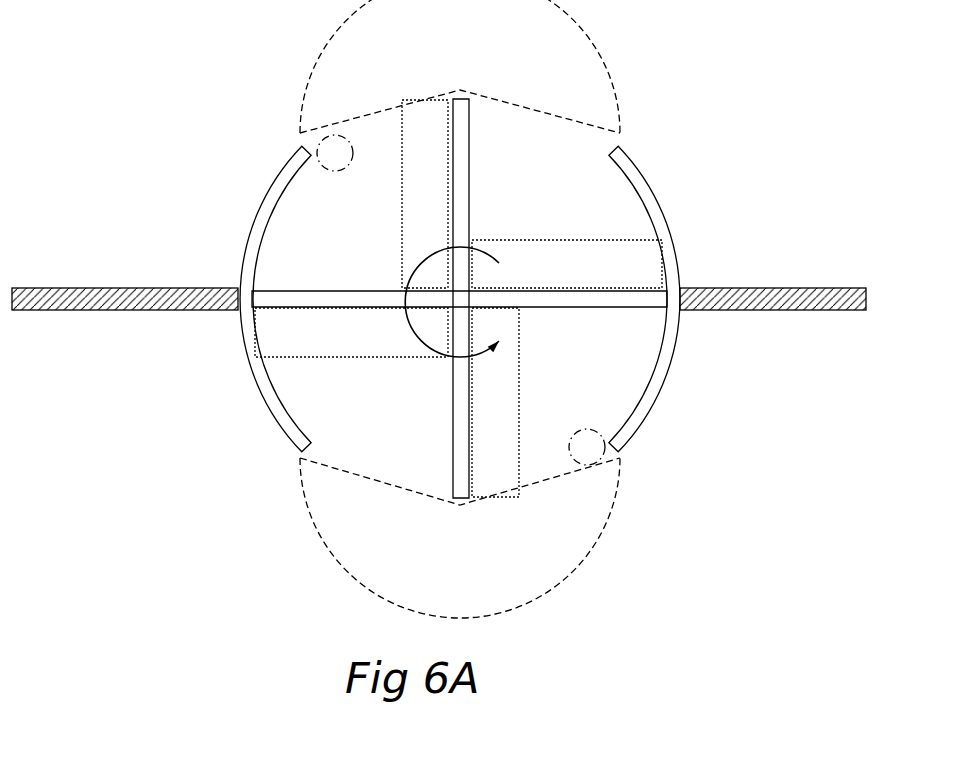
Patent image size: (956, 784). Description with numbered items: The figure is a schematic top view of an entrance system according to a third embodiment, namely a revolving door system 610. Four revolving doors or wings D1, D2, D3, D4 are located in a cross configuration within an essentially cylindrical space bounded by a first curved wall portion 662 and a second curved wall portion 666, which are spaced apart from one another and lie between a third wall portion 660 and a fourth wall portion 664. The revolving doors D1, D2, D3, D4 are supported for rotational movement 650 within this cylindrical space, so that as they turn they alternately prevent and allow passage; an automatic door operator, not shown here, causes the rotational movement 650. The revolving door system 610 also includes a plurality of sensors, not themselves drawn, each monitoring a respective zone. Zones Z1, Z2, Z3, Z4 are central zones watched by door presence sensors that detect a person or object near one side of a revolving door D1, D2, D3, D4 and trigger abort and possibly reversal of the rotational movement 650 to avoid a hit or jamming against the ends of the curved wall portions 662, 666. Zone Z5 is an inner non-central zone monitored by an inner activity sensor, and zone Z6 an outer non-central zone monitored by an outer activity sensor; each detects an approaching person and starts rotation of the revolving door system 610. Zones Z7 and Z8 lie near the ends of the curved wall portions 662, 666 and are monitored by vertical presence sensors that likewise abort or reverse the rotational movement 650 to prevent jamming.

The revolving door system 610 is at (135, 98).
The third wall portion 660 is at (146, 296).
The fourth wall portion 664 is at (756, 296).
The first curved wall portion 662 is at (256, 355).
The second curved wall portion 666 is at (668, 366).
The rotational movement 650 is at (490, 352).
The revolving door D1 is at (462, 190).
The revolving door D2 is at (633, 303).
The revolving door D3 is at (461, 441).
The revolving door D4 is at (332, 293).
The zone Z1 is at (440, 213).
The zone Z2 is at (588, 278).
The zone Z3 is at (514, 428).
The zone Z4 is at (372, 348).
The zone Z5 is at (479, 47).
The zone Z6 is at (479, 568).
The zone Z7 is at (325, 163).
The zone Z8 is at (588, 466).